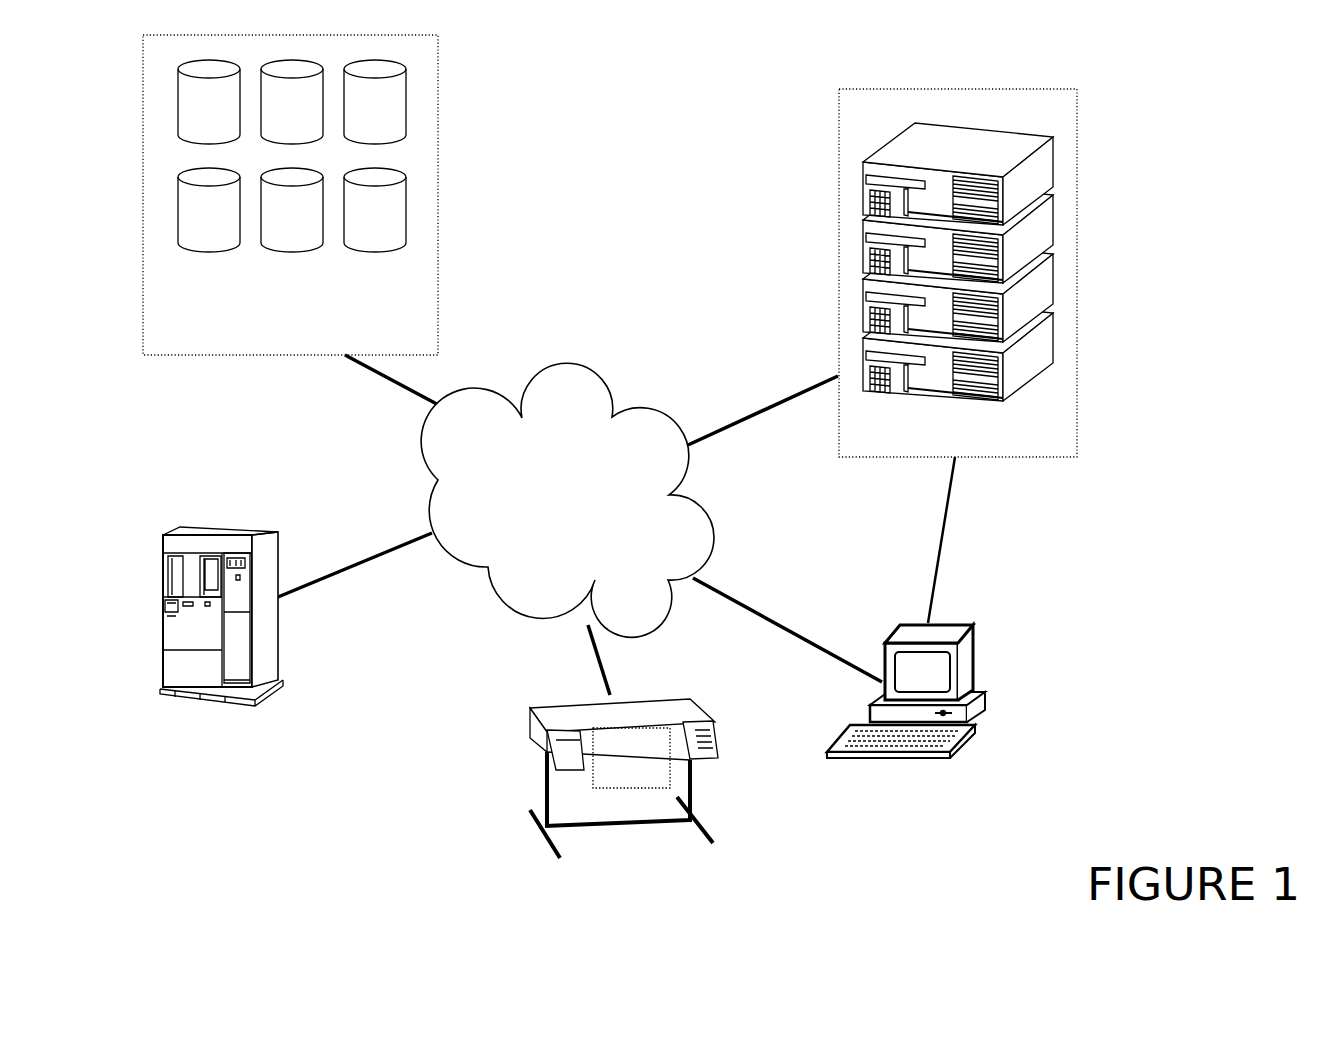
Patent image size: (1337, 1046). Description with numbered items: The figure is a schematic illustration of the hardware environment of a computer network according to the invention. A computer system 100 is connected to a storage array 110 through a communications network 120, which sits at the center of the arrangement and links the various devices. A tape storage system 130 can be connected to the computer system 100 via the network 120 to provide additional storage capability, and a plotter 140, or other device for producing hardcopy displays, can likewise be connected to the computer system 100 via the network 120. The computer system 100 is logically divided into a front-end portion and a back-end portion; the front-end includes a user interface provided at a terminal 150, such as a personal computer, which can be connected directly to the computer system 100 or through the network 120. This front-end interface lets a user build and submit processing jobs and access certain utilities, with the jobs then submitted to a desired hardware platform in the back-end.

The computer system 100 is at (1042, 442).
The storage array 110 is at (303, 335).
The communications network 120 is at (578, 512).
The tape storage system 130 is at (163, 567).
The plotter 140 is at (528, 715).
The terminal 150 is at (888, 633).